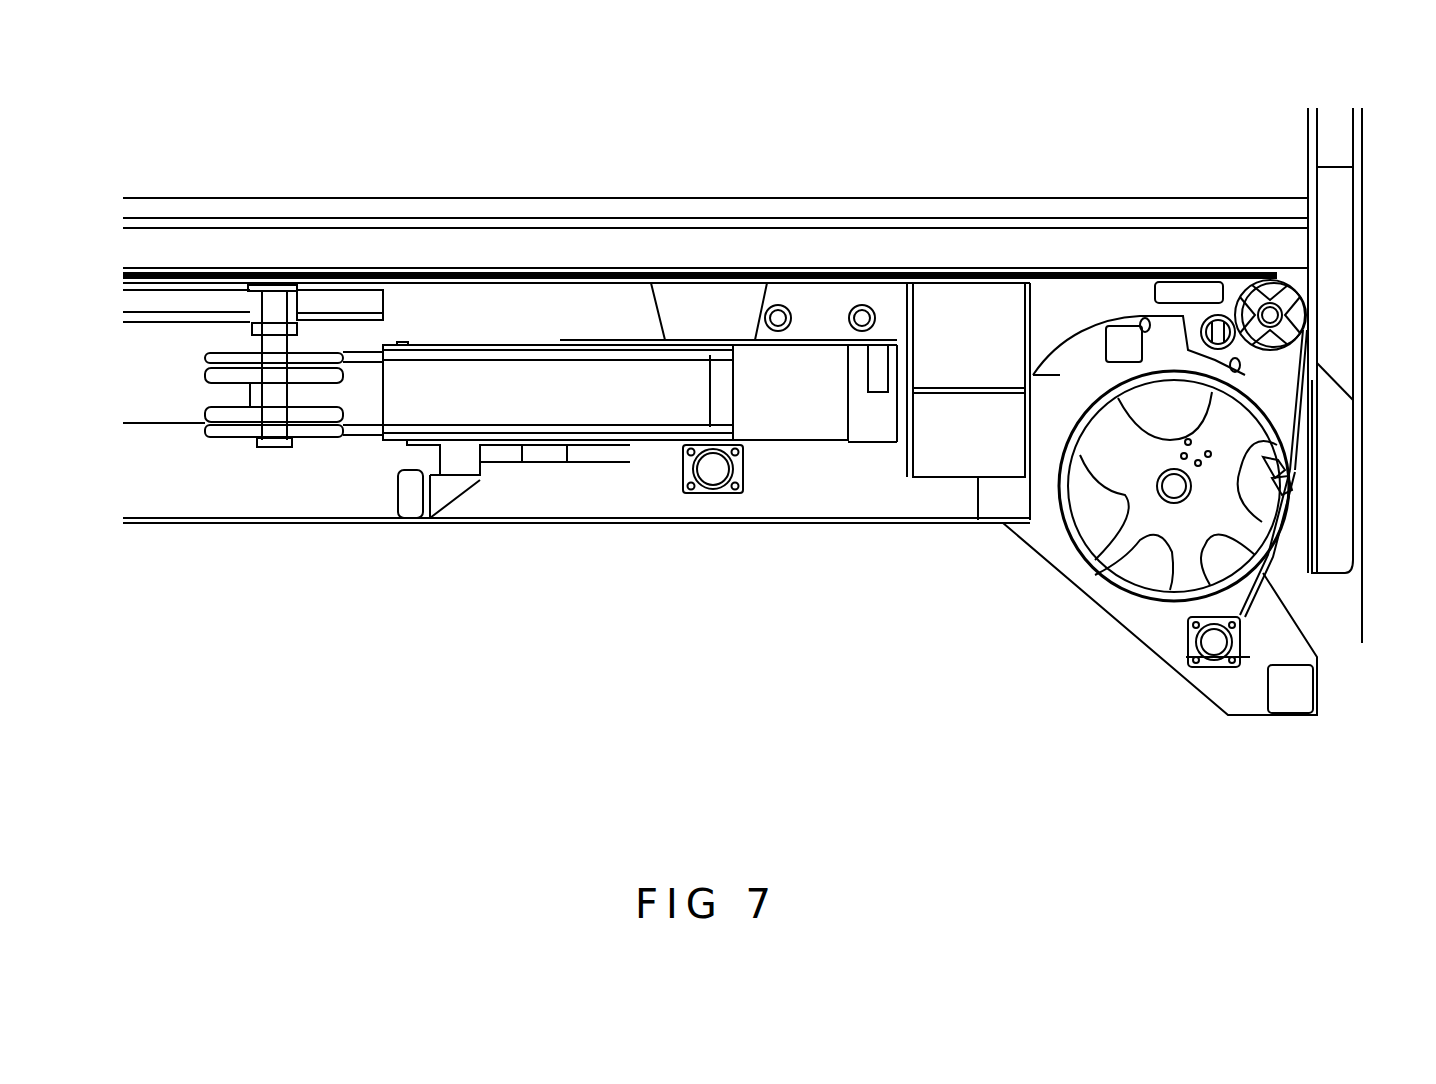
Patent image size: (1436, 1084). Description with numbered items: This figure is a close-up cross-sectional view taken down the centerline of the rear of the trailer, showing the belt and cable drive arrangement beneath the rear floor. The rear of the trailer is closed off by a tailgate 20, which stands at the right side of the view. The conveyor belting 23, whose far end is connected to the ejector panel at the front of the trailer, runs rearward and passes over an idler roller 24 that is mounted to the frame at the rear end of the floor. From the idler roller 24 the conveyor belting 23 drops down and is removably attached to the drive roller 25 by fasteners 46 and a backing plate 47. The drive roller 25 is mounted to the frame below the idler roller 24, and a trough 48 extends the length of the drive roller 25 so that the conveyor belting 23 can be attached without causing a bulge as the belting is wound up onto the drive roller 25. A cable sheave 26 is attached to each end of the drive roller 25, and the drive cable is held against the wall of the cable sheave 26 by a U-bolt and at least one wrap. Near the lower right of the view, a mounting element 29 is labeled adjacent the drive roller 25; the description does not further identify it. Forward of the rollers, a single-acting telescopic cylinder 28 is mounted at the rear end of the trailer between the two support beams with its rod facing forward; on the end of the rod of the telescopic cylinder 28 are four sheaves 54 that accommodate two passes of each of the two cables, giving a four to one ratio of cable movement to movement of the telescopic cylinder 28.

The tailgate 20 is at (1365, 365).
The conveyor belting 23 is at (1303, 415).
The idler roller 24 is at (1302, 297).
The drive roller 25 is at (1270, 545).
The cable sheave 26 is at (1098, 578).
The telescopic cylinder 28 is at (840, 445).
The bearing flange 29 is at (1247, 608).
The fasteners 46 is at (1290, 480).
The backing plate 47 is at (1288, 466).
The trough 48 is at (1262, 480).
The sheaves 54 is at (205, 355).